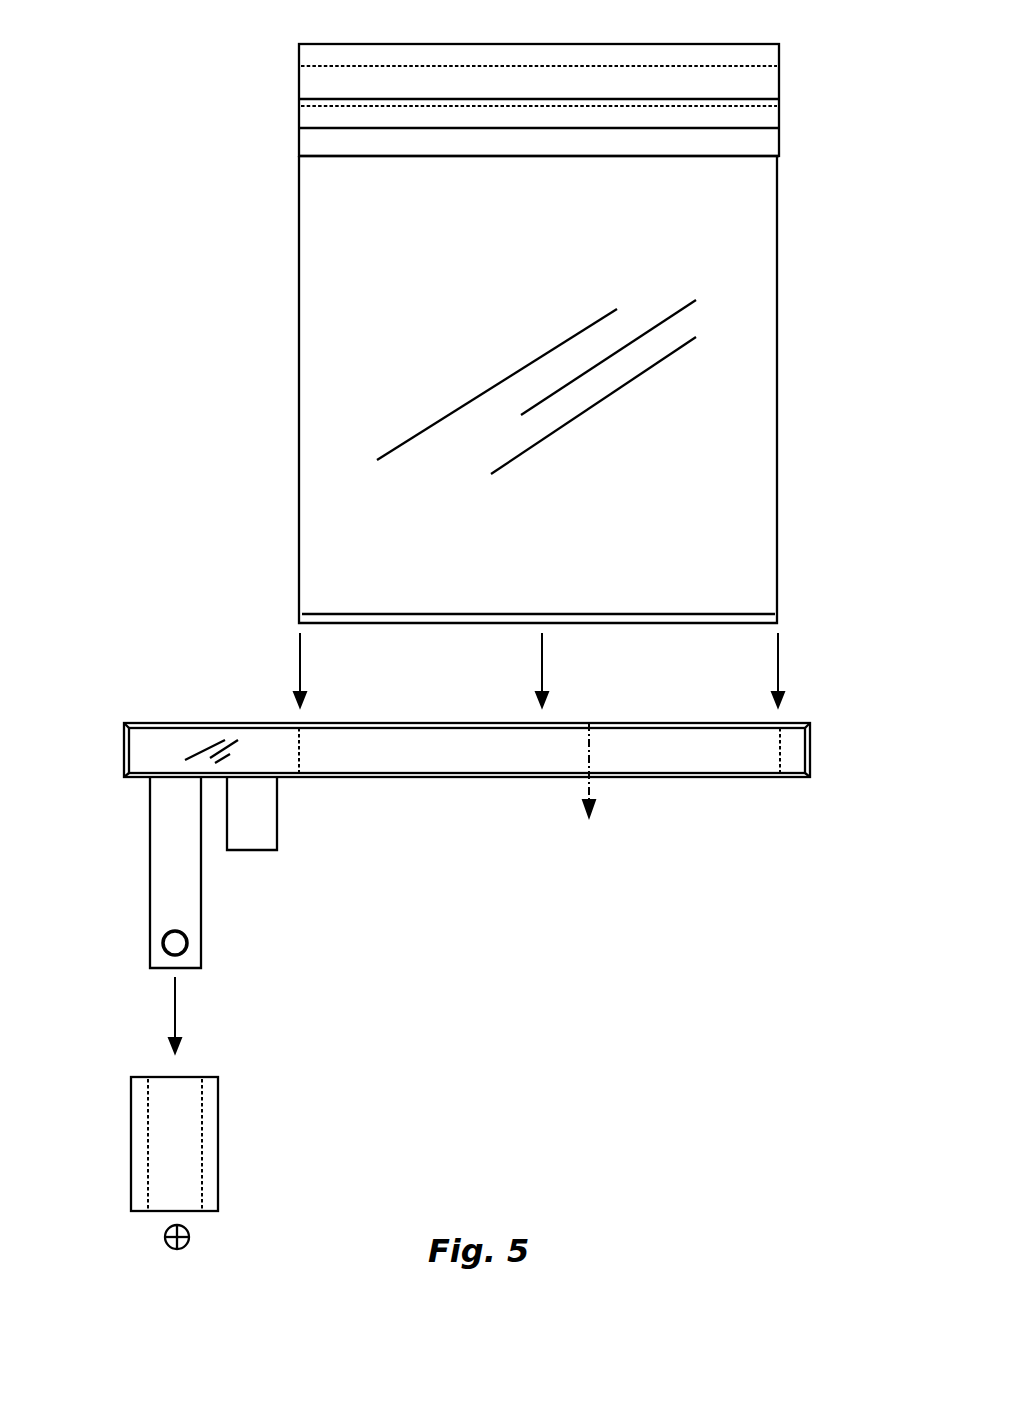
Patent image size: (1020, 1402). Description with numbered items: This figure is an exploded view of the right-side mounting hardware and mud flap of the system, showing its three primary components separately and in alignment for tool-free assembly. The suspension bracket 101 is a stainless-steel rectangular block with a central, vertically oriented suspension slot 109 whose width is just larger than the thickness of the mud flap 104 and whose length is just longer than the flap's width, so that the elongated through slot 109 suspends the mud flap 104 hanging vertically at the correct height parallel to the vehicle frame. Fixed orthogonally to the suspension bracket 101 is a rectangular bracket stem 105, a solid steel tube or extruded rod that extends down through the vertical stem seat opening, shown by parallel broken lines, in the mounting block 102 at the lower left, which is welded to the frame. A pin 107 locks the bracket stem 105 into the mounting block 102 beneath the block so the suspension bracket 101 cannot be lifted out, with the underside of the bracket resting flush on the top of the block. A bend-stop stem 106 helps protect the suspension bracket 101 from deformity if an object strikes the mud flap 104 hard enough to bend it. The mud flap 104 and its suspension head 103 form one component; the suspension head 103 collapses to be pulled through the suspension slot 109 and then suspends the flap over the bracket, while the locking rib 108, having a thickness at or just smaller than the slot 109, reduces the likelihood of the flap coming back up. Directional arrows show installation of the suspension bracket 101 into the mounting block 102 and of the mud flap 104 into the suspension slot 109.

The suspension bracket 101 is at (251, 722).
The mounting block 102 is at (131, 1142).
The suspension head 103 is at (543, 44).
The mud flap 104 is at (299, 422).
The bracket stem 105 is at (150, 836).
The bend-stop stem 106 is at (277, 815).
The pin 107 is at (164, 1236).
The locking rib 108 is at (533, 156).
The suspension slot 109 is at (589, 723).